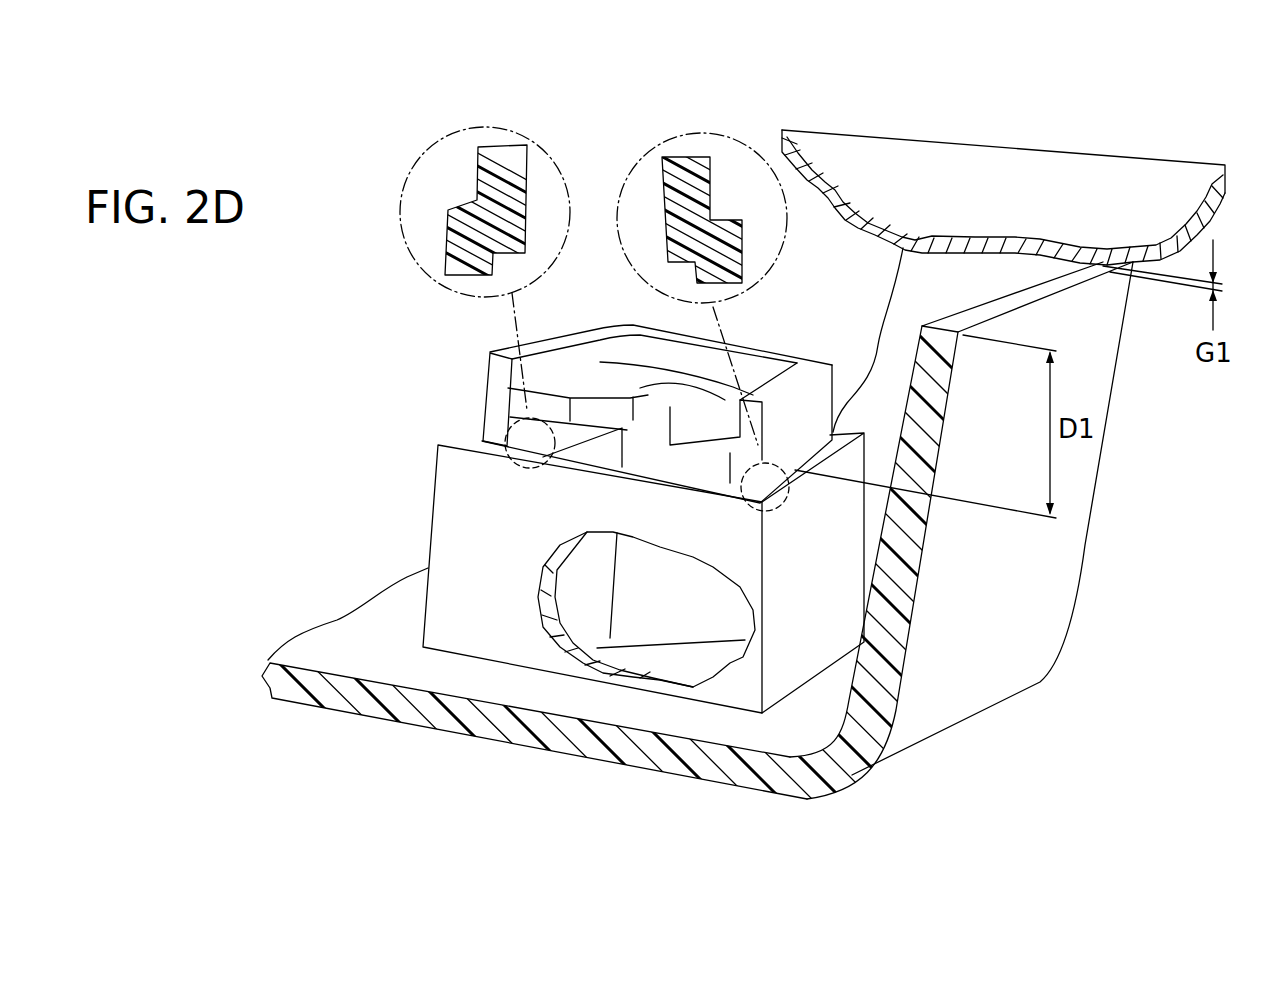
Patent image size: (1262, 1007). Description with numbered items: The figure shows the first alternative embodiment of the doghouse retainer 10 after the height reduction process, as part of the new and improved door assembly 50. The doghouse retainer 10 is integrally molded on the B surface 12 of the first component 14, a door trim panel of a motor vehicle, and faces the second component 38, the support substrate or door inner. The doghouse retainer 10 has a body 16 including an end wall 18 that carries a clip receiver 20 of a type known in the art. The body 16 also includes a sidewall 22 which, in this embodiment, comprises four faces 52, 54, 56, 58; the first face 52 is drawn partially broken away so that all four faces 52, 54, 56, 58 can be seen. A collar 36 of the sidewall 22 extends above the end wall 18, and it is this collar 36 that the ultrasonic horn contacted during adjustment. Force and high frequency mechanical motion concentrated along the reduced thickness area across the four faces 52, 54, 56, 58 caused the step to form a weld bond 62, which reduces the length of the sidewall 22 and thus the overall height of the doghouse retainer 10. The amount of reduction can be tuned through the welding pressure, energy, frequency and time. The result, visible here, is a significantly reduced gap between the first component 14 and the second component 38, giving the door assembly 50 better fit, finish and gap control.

The doghouse retainer 10 is at (384, 340).
The B surface 12 is at (320, 657).
The first component 14 is at (1064, 550).
The body 16 is at (408, 548).
The end wall 18 is at (590, 390).
The clip receiver 20 is at (672, 390).
The sidewall 22 is at (434, 502).
The collar 36 is at (510, 350).
The second component 38 is at (997, 167).
The door assembly 50 is at (1157, 120).
The first face 52 is at (503, 630).
The second face 54 is at (582, 608).
The third face 56 is at (678, 608).
The fourth face 58 is at (810, 630).
The weld bond 62 is at (487, 437).